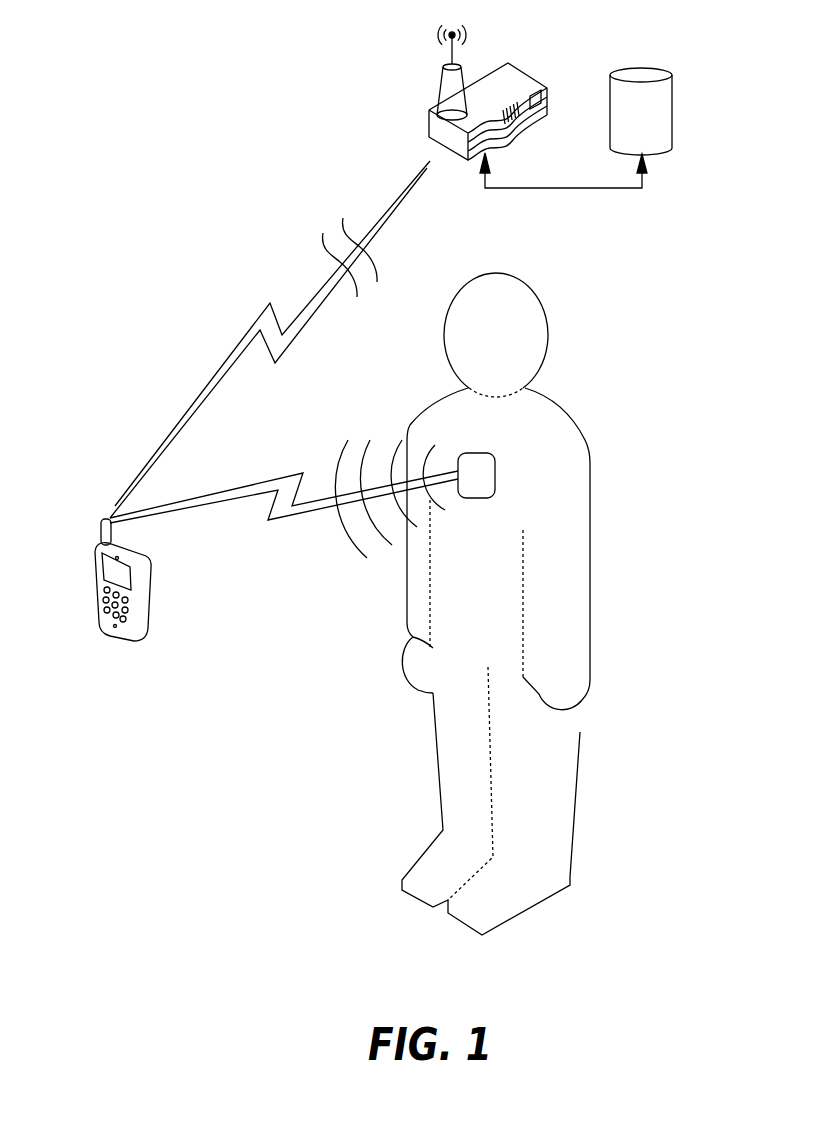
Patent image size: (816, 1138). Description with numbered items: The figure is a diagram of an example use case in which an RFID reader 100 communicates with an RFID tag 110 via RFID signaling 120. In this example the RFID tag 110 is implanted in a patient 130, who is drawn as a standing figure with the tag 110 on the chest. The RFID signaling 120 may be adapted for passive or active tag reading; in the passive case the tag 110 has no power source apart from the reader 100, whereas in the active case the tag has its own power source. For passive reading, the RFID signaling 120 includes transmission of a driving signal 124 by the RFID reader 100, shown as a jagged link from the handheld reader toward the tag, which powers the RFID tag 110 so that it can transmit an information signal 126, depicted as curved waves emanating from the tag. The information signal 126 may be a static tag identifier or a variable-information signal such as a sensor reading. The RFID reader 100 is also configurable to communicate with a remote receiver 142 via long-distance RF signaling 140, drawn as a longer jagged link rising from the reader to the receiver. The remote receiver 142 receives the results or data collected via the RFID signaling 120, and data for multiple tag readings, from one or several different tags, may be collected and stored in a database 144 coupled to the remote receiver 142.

The RFID reader 100 is at (143, 567).
The RFID tag 110 is at (496, 474).
The RFID signaling 120 is at (284, 499).
The driving signal 124 is at (252, 483).
The information signal 126 is at (373, 447).
The patient 130 is at (593, 493).
The long-distance RF signaling 140 is at (266, 279).
The remote receiver 142 is at (542, 78).
The database 144 is at (680, 92).